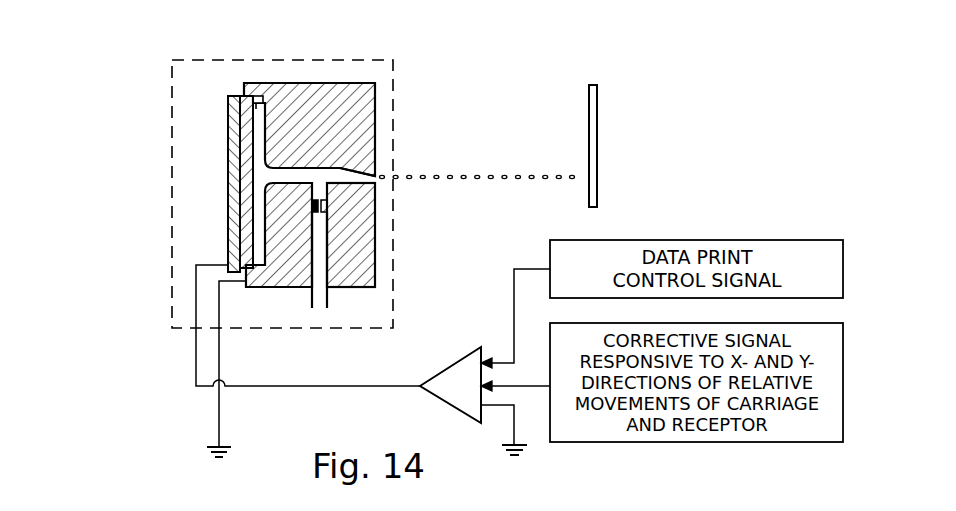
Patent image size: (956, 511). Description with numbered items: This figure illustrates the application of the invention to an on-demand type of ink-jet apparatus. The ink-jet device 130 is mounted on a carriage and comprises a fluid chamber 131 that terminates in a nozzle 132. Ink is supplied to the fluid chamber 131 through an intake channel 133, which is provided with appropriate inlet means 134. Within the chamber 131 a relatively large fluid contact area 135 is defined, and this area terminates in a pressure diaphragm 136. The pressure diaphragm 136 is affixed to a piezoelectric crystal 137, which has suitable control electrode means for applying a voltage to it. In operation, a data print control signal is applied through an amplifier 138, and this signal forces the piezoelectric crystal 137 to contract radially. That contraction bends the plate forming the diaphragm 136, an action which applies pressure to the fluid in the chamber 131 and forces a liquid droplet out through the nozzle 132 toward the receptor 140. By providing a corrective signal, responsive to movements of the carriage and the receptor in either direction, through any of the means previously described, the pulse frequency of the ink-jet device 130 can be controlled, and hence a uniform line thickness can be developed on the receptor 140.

The ink-jet device 130 is at (317, 78).
The fluid chamber 131 is at (345, 183).
The nozzle 132 is at (342, 174).
The intake channel 133 is at (317, 257).
The inlet means 134 is at (314, 206).
The fluid contact area 135 is at (260, 96).
The pressure diaphragm 136 is at (243, 112).
The piezoelectric crystal 137 is at (233, 145).
The amplifier 138 is at (456, 170).
The receptor 140 is at (590, 118).